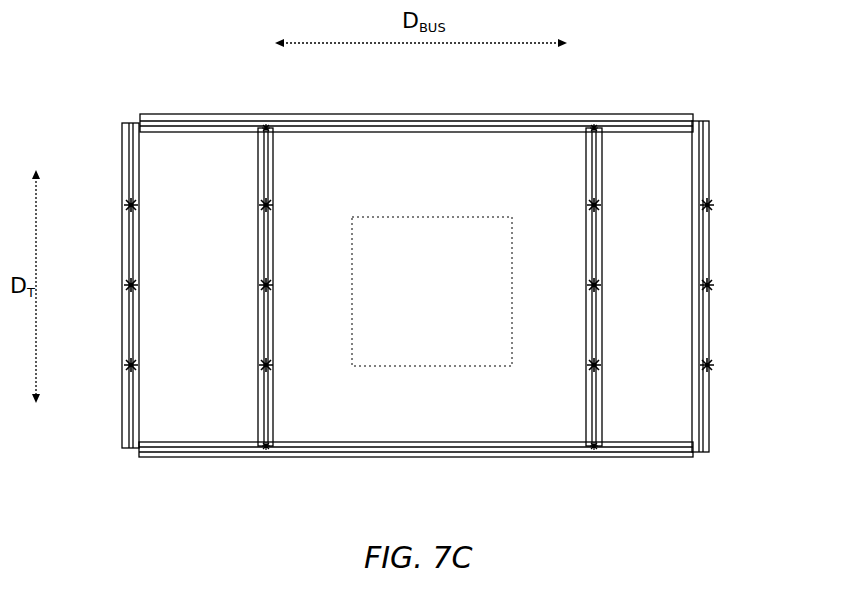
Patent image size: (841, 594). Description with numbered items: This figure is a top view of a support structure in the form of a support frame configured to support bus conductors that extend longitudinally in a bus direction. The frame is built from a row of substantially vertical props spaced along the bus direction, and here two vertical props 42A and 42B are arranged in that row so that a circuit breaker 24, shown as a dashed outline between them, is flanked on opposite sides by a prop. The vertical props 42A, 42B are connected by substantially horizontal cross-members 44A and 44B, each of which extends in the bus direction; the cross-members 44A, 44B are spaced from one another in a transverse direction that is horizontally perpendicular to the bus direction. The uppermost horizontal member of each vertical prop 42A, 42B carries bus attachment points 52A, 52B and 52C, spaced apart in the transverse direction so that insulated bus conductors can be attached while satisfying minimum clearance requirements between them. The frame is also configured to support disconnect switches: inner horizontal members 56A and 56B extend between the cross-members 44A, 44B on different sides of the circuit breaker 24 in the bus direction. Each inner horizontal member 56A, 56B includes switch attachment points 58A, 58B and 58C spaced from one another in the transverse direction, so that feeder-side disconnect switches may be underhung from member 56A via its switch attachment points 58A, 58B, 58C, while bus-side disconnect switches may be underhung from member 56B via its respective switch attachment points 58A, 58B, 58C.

The circuit breaker 24 is at (457, 217).
The vertical prop 42A is at (119, 424).
The vertical prop 42B is at (718, 391).
The cross-member 44A is at (298, 455).
The cross-member 44B is at (472, 114).
The bus attachment point 52A is at (124, 206).
The bus attachment point 52B is at (124, 286).
The bus attachment point 52C is at (124, 366).
The inner horizontal member 56A is at (274, 250).
The inner horizontal member 56B is at (601, 245).
The switch attachment point 58A is at (274, 203).
The switch attachment point 58B is at (274, 284).
The switch attachment point 58C is at (274, 364).